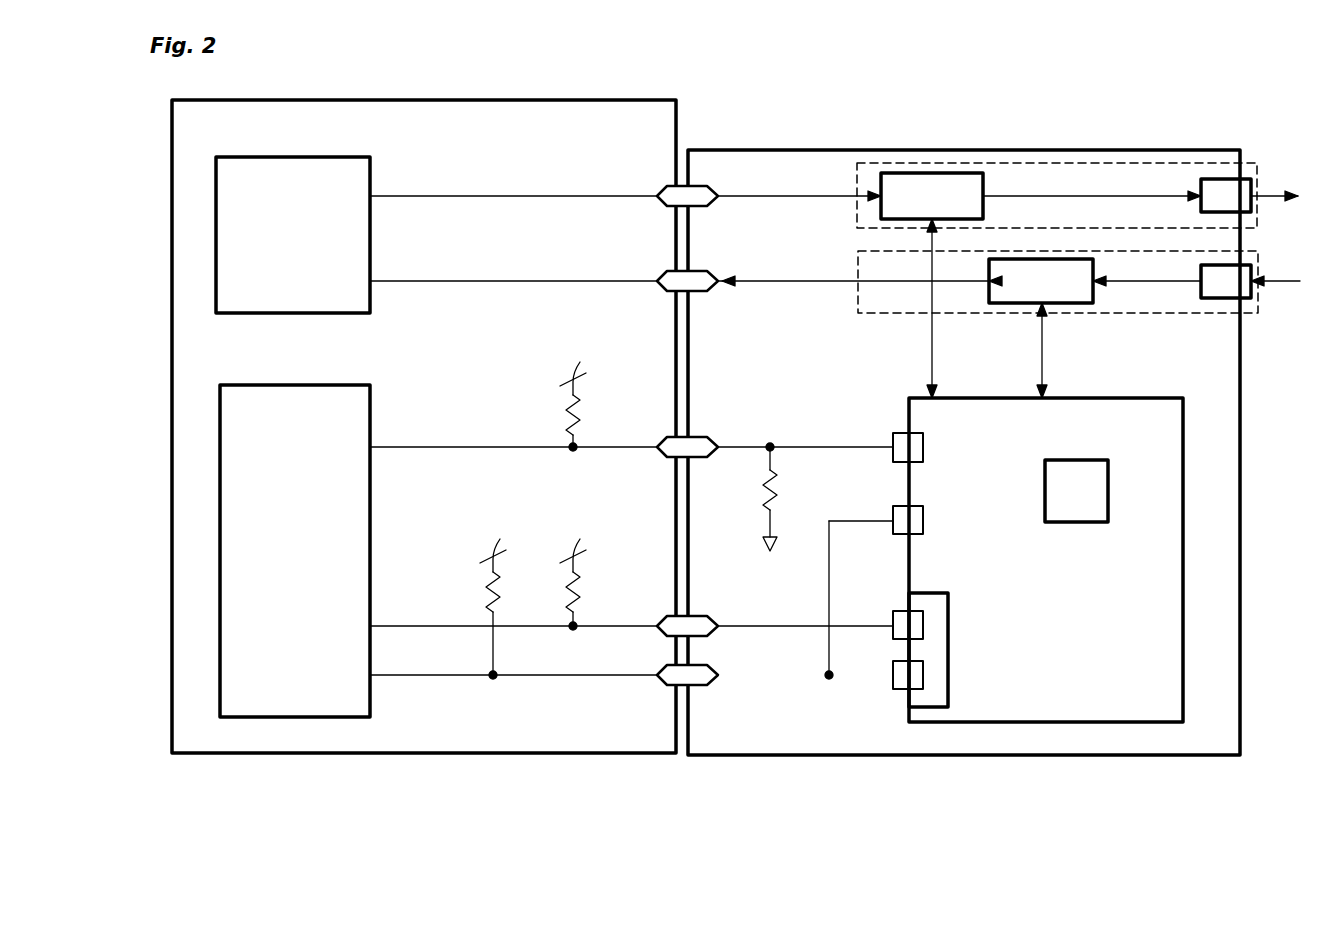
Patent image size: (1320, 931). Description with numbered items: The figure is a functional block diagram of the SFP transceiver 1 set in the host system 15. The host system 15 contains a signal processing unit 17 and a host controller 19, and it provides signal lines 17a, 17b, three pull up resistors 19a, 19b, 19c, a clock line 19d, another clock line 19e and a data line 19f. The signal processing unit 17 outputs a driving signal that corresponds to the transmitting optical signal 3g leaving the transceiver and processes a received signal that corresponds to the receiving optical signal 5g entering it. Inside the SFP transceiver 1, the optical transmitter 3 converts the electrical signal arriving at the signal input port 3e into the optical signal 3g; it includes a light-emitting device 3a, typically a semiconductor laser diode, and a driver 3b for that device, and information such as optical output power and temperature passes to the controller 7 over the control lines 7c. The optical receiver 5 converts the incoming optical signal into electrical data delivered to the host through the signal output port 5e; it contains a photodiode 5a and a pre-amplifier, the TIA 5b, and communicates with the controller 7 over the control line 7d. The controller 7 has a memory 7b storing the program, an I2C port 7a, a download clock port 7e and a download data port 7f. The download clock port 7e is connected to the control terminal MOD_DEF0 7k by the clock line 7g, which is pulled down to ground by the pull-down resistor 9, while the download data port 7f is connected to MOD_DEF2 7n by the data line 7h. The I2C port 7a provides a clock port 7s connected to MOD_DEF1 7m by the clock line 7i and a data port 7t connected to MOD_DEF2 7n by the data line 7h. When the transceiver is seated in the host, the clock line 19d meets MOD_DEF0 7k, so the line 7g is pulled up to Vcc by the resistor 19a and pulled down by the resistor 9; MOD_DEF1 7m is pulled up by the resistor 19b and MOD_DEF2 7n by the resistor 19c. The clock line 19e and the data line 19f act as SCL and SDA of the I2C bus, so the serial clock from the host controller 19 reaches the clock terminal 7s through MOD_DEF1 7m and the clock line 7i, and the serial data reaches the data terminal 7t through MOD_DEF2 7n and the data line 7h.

The SFP transceiver 1 is at (803, 149).
The optical transmitter 3 is at (1065, 162).
The light-emitting device 3a is at (1218, 178).
The driver 3b is at (932, 172).
The signal input port 3e is at (695, 186).
The transmitting optical signal 3g is at (1278, 195).
The optical receiver 5 is at (857, 262).
The light-receiving device 5a is at (1222, 299).
The TIA (pre-amplifier) 5b is at (1068, 304).
The signal output port 5e is at (695, 271).
The receiving optical signal 5g is at (1278, 280).
The controller 7 is at (1185, 425).
The I2C port 7a is at (950, 603).
The memory 7b is at (1110, 490).
The control lines 7c is at (930, 345).
The control line 7d is at (1040, 343).
The download clock port 7e is at (925, 447).
The download data port 7f is at (925, 521).
The clock line 7g is at (812, 446).
The data line 7h is at (828, 582).
The clock line 7i is at (745, 625).
The MOD_DEF0 control terminal 7k is at (695, 458).
The MOD_DEF1 control terminal 7m is at (695, 616).
The MOD_DEF2 control terminal 7n is at (695, 686).
The clock port 7s is at (891, 641).
The data port 7t is at (895, 690).
The pull-down resistor 9 is at (757, 513).
The host system 15 is at (655, 100).
The signal processing unit 17 is at (372, 165).
The signal line 17a is at (537, 195).
The signal line 17b is at (523, 280).
The host controller 19 is at (372, 400).
The pull up resistor 19a is at (568, 398).
The pull up resistor 19b is at (583, 590).
The pull up resistor 19c is at (485, 585).
The clock line 19d is at (465, 446).
The clock line 19e is at (637, 625).
The data line 19f is at (565, 676).